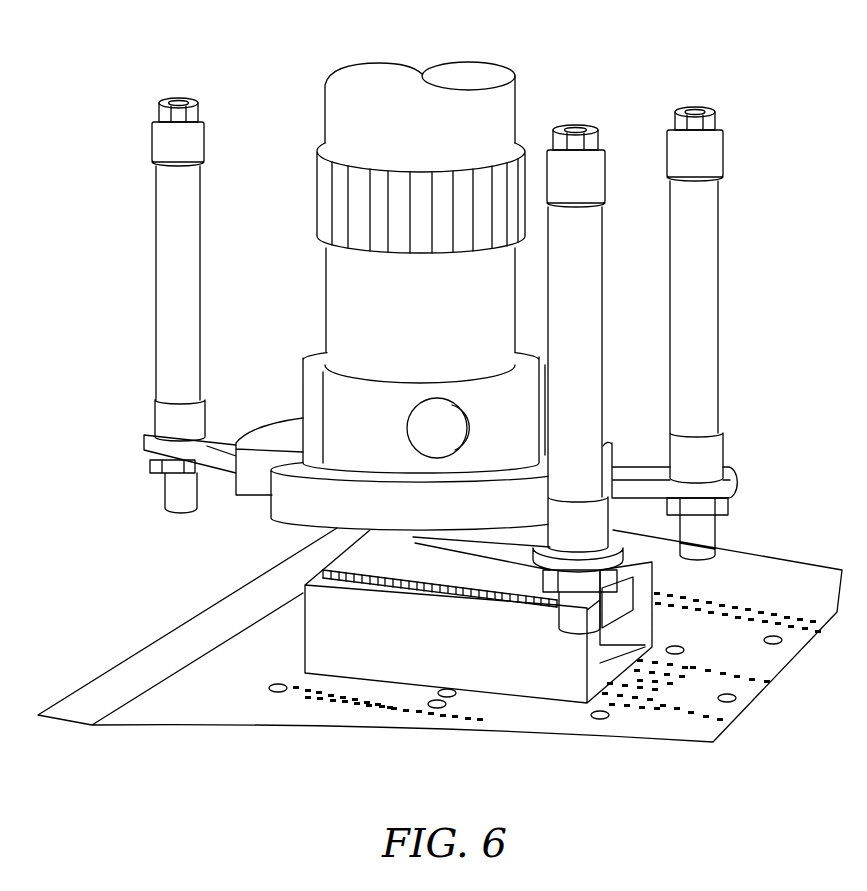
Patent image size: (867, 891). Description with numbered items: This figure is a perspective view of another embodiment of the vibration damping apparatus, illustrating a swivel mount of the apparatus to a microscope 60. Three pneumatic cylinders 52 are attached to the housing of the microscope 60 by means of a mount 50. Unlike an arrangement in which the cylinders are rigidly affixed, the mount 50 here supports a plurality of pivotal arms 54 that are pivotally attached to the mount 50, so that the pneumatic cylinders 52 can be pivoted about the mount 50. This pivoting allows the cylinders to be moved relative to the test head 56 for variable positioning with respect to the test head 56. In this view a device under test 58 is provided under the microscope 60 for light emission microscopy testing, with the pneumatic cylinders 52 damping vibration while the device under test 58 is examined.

The mount 50 is at (378, 449).
The pneumatic cylinders 52 is at (178, 100).
The pivotal arms 54 is at (624, 474).
The test head 56 is at (598, 720).
The device under test 58 is at (386, 650).
The microscope 60 is at (370, 86).